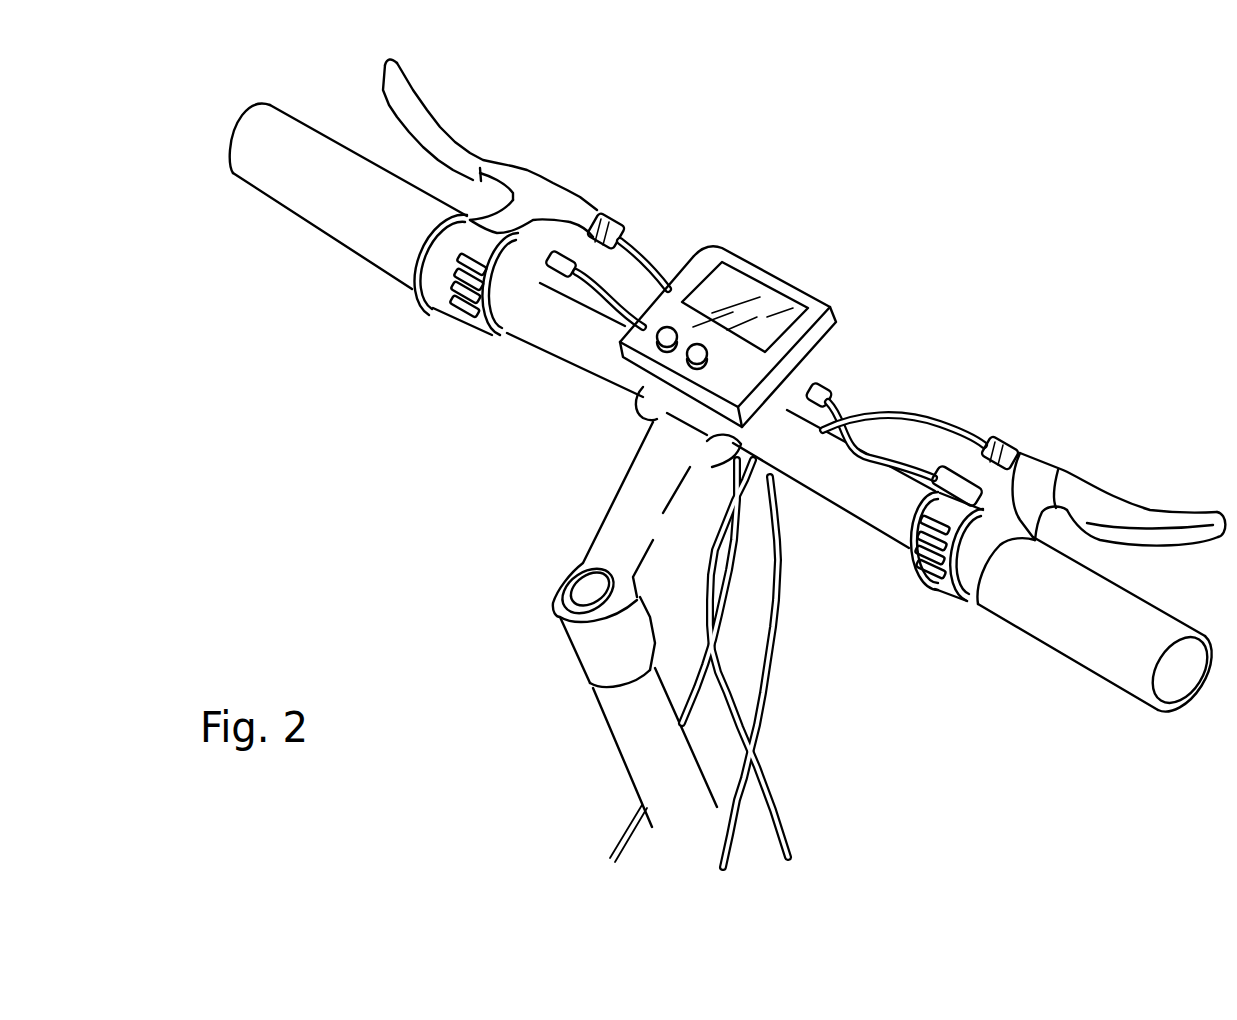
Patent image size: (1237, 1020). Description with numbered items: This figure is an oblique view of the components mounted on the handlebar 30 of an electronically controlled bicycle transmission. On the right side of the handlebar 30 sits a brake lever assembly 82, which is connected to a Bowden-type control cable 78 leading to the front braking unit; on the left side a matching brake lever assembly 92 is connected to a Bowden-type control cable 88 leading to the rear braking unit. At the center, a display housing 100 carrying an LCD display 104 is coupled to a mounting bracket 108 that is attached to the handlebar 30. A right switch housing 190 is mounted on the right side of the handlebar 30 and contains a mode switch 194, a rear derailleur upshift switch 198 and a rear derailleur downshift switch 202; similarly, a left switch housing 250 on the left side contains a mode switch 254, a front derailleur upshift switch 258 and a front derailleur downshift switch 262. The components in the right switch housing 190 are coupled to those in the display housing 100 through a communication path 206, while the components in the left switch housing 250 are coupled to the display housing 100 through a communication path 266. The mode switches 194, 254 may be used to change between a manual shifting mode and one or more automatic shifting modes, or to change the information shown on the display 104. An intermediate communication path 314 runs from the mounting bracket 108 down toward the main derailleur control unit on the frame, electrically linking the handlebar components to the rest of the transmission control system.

The handlebar 30 is at (580, 357).
The Bowden-type control cable 78 is at (963, 427).
The brake lever assembly 82 is at (1080, 462).
The Bowden-type control cable 88 is at (634, 262).
The brake lever assembly 92 is at (502, 114).
The display housing 100 is at (773, 316).
The LCD display 104 is at (742, 293).
The mounting bracket 108 is at (826, 354).
The right switch housing 190 is at (898, 579).
The mode switch 194 is at (907, 553).
The rear derailleur upshift switch 198 is at (915, 527).
The rear derailleur downshift switch 202 is at (917, 572).
The communication path 206 is at (843, 403).
The left switch housing 250 is at (411, 304).
The mode switch 254 is at (455, 287).
The front derailleur upshift switch 258 is at (450, 272).
The front derailleur downshift switch 262 is at (460, 318).
The communication path 266 is at (608, 294).
The intermediate communication path 314 is at (763, 727).